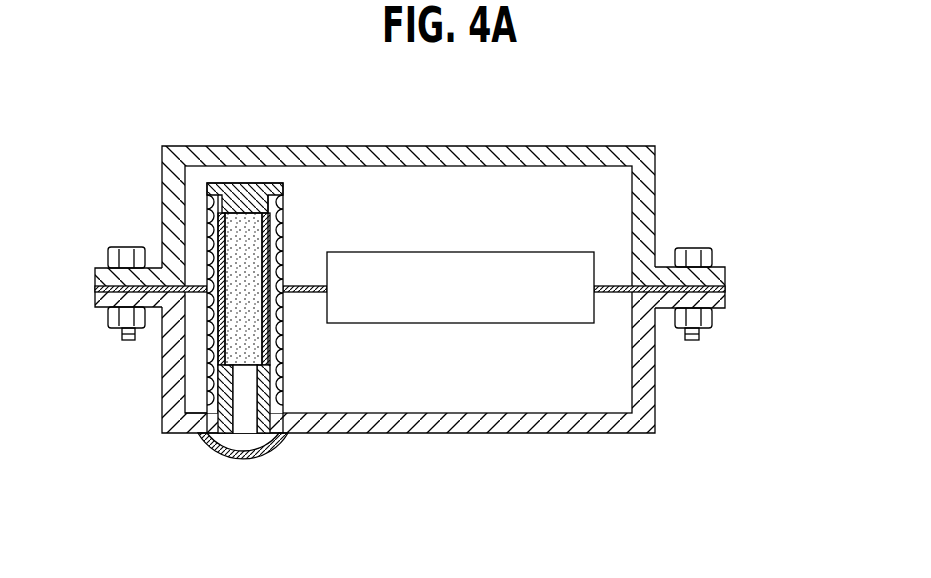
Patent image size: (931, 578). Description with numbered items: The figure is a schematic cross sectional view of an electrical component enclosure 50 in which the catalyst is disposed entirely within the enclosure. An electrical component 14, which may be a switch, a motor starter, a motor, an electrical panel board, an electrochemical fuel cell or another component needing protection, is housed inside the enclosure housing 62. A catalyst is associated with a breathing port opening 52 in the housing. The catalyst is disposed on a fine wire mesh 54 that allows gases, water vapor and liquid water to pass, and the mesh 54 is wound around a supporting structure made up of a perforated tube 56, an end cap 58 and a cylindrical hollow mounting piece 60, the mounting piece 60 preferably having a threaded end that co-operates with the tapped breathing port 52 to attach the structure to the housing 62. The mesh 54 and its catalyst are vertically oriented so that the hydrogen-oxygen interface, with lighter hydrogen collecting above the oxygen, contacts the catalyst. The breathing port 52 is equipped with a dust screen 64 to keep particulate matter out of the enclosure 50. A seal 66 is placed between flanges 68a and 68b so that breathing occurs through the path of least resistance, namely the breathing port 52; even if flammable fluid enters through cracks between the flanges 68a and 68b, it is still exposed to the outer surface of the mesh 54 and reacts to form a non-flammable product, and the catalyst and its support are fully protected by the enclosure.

The electrical component 14 is at (435, 306).
The electrical component enclosure 50 is at (250, 108).
The breathing port opening 52 is at (240, 420).
The fine wire mesh 54 is at (208, 202).
The perforated tube 56 is at (233, 255).
The end cap 58 is at (222, 190).
The cylindrical hollow mounting piece 60 is at (190, 413).
The enclosure housing 62 is at (162, 372).
The dust screen 64 is at (263, 455).
The seal 66 is at (615, 287).
The flange 68a is at (723, 266).
The flange 68b is at (725, 300).